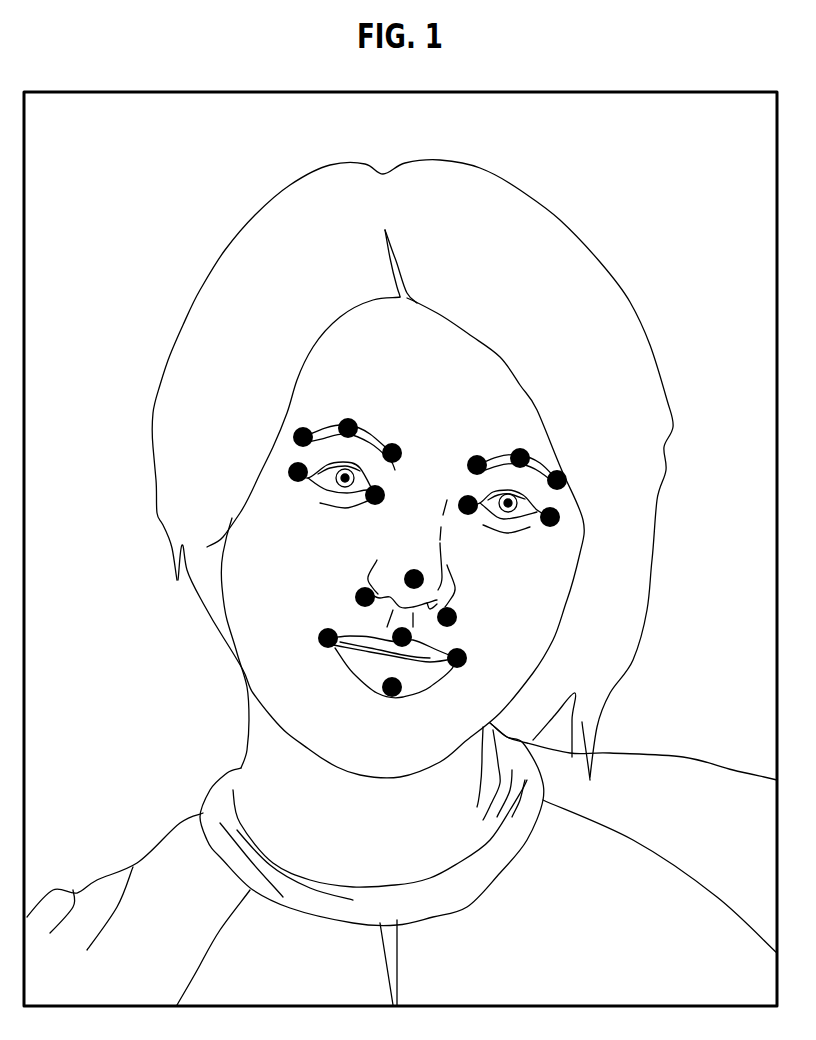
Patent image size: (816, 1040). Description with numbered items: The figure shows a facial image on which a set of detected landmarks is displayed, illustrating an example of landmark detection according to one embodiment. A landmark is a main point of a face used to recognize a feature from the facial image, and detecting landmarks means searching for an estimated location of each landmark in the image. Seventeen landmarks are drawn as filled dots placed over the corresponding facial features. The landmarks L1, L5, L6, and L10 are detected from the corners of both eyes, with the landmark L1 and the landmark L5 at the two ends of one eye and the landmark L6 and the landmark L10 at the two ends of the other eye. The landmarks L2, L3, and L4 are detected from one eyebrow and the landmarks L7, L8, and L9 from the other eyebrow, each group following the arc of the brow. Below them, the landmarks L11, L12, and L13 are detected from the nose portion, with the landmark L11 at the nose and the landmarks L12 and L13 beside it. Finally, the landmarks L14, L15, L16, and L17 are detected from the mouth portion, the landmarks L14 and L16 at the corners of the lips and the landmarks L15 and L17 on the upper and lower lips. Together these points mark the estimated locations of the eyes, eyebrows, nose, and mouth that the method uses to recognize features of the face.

The landmark L1 is at (294, 487).
The landmark L2 is at (303, 419).
The landmark L3 is at (351, 412).
The landmark L4 is at (399, 438).
The landmark L5 is at (391, 503).
The landmark L6 is at (466, 521).
The landmark L7 is at (462, 463).
The landmark L8 is at (523, 442).
The landmark L9 is at (573, 478).
The landmark L10 is at (559, 532).
The landmark L11 is at (412, 562).
The landmark L12 is at (344, 589).
The landmark L13 is at (471, 616).
The landmark L14 is at (308, 638).
The landmark L15 is at (382, 627).
The landmark L16 is at (480, 661).
The landmark L17 is at (392, 703).